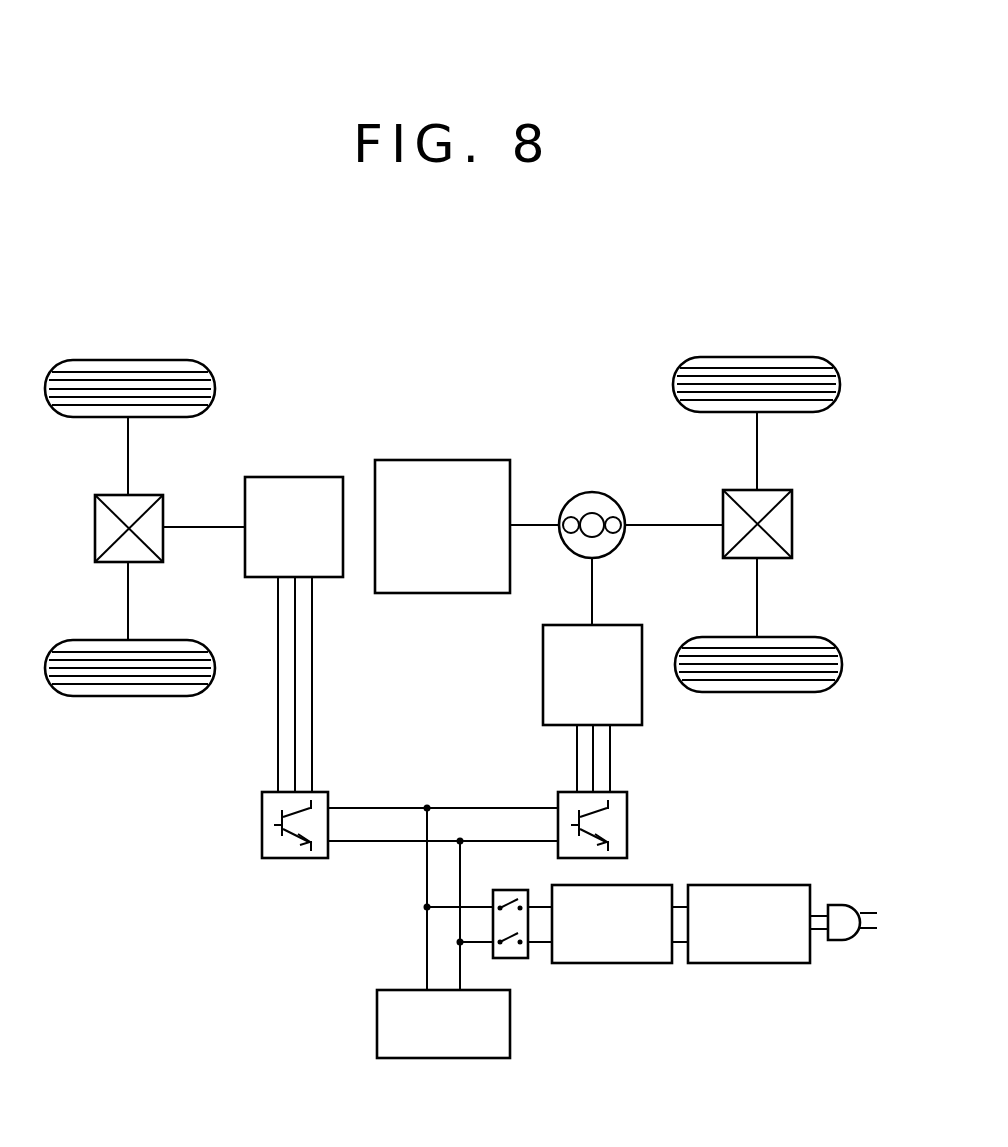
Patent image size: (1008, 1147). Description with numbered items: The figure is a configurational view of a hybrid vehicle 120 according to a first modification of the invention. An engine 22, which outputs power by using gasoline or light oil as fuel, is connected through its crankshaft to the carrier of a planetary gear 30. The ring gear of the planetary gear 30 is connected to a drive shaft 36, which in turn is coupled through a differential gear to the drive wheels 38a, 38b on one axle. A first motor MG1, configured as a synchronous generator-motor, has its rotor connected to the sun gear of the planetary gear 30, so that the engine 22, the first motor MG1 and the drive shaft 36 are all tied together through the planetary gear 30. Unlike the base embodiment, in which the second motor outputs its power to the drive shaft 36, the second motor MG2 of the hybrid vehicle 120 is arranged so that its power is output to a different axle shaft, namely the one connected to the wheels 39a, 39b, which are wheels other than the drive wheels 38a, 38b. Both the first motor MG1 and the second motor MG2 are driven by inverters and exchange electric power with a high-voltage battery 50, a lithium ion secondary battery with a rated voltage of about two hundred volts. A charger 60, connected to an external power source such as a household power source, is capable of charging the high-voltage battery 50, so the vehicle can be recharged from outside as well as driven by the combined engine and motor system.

The hybrid vehicle 120 is at (542, 307).
The engine 22 is at (443, 457).
The planetary gear 30 is at (595, 490).
The drive shaft 36 is at (663, 523).
The drive wheel 38a is at (758, 353).
The drive wheel 38b is at (758, 694).
The wheel 39a is at (133, 356).
The wheel 39b is at (129, 698).
The high-voltage battery 50 is at (512, 1025).
The charger 60 is at (694, 861).
The first motor MG1 is at (543, 677).
The second motor MG2 is at (297, 476).